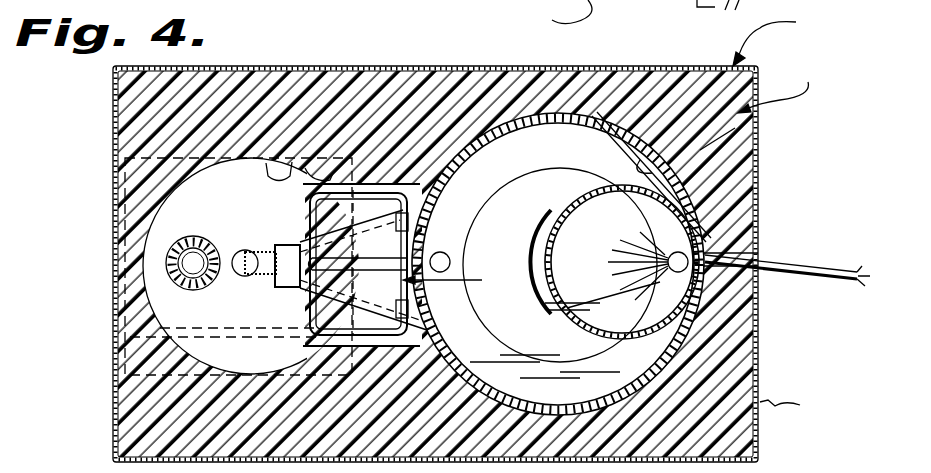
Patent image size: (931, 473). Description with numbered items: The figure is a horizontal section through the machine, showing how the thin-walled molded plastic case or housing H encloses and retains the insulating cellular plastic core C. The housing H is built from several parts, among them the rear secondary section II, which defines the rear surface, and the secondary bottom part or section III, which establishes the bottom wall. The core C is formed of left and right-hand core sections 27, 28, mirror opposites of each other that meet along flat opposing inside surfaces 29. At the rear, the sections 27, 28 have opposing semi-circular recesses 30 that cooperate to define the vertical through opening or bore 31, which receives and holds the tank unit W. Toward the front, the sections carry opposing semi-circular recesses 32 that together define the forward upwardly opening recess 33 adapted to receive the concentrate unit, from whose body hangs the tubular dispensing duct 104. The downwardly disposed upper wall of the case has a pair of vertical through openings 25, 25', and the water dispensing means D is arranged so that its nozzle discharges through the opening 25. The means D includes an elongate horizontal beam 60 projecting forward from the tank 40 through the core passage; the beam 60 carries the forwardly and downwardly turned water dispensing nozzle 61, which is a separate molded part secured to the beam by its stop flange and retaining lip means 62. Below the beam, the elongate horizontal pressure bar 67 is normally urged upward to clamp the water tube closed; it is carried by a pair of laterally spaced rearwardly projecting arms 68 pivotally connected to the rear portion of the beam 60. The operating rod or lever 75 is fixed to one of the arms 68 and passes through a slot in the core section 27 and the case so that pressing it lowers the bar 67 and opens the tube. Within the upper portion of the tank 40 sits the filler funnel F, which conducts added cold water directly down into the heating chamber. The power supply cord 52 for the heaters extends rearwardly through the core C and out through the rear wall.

The left-hand core section 27 is at (727, 357).
The pressure bar 67 is at (297, 208).
The semi-circular opposing recesses 32 is at (257, 162).
The forward upwardly opening recess 33 is at (275, 172).
The operating rod or lever 75 is at (275, 342).
The tubular dispensing duct 104 is at (178, 256).
The vertical through opening 25' is at (183, 285).
The vertical through opening 25 is at (245, 251).
The water dispensing nozzle 61 is at (265, 280).
The stop flange and retaining lip means 62 is at (280, 244).
The rearwardly projecting arms 68 is at (365, 190).
The tank unit W is at (553, 112).
The tank 40 is at (575, 122).
The beam 60 is at (428, 228).
The water dispensing means D is at (454, 281).
The flat opposing inside surfaces 29 is at (740, 238).
The filler funnel F is at (556, 216).
The vertical through opening or bore 31 is at (690, 196).
The semi-circular recesses 30 is at (652, 173).
The right-hand core section 28 is at (735, 128).
The power supply cord 52 is at (856, 274).
The case or housing H is at (777, 36).
The core C is at (778, 84).
The rear secondary section II is at (791, 404).
The secondary bottom part or section III is at (563, 12).